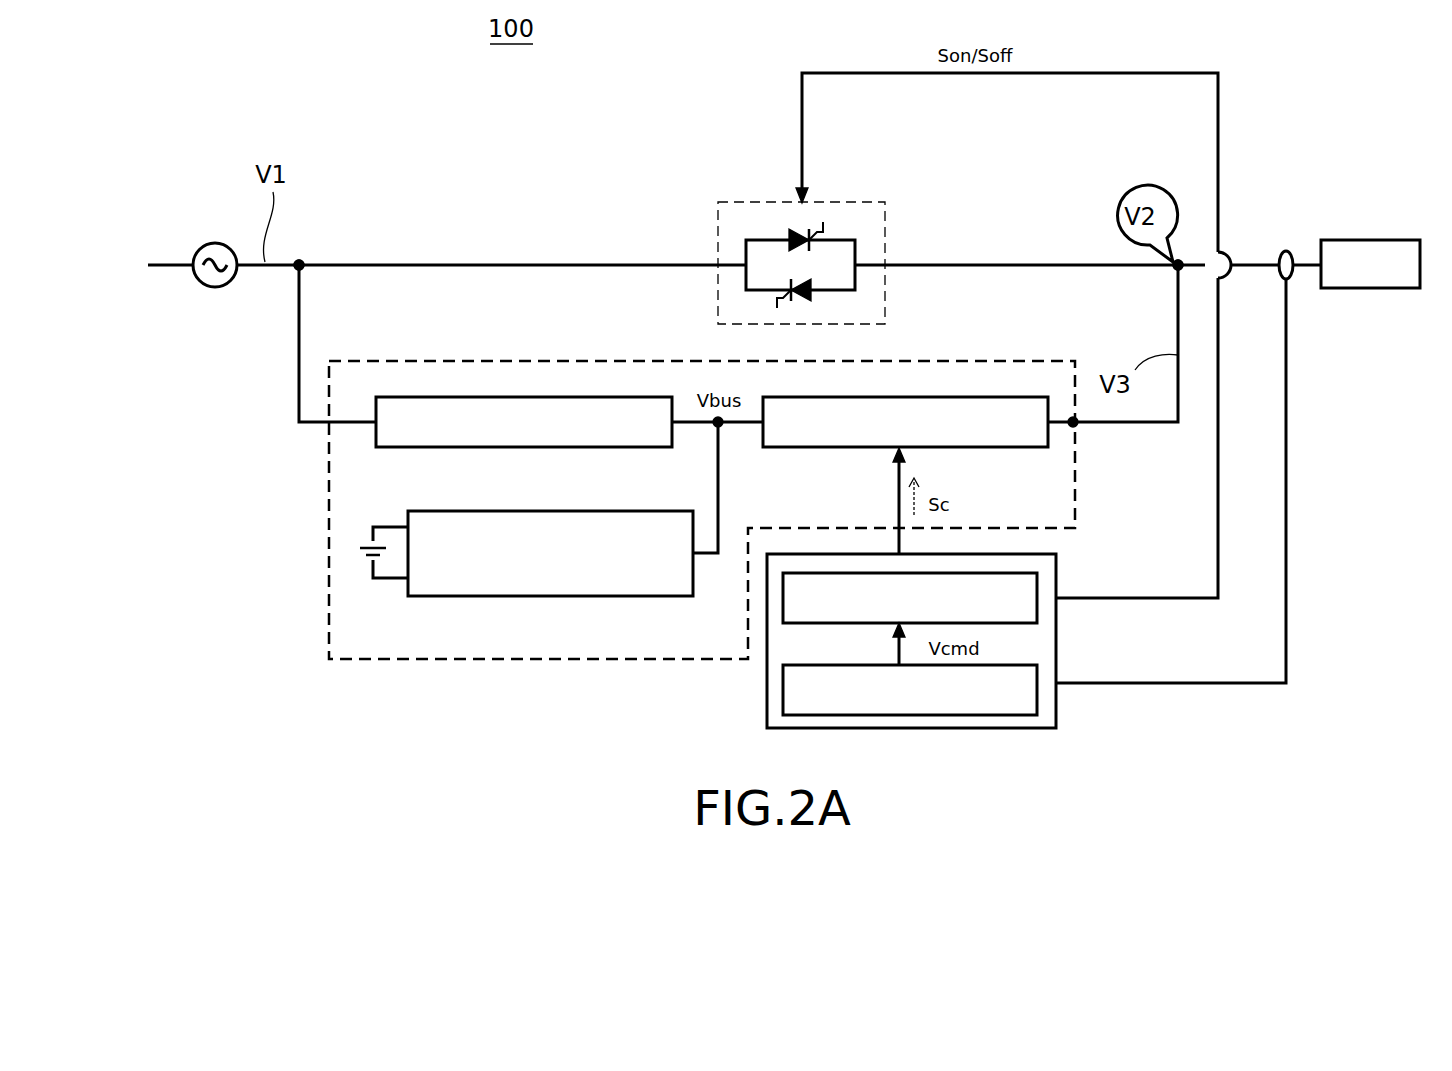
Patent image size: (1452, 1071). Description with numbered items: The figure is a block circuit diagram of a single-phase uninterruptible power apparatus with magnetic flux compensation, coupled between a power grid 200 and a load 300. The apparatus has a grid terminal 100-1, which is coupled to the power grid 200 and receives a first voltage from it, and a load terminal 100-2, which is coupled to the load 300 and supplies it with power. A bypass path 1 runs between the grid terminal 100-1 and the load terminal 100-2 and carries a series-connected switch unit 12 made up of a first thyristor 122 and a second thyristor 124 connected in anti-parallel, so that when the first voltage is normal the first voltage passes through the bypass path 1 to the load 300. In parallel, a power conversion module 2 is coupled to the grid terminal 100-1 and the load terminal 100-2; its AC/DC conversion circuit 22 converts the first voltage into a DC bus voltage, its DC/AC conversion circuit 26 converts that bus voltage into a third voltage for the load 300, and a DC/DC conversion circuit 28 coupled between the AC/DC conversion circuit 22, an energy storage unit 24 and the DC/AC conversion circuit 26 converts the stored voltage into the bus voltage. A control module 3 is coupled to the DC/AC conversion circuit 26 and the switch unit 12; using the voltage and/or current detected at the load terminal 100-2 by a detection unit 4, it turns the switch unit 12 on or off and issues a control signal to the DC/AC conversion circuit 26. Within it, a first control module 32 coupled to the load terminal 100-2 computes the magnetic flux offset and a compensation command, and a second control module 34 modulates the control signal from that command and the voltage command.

The bypass path 1 is at (694, 186).
The power conversion module 2 is at (373, 640).
The control module 3 is at (944, 645).
The detection unit 4 is at (1286, 250).
The switch unit 12 is at (753, 226).
The first thyristor 122 is at (785, 235).
The second thyristor 124 is at (770, 293).
The AC/DC conversion circuit 22 is at (558, 440).
The energy storage unit 24 is at (355, 562).
The DC/AC conversion circuit 26 is at (824, 438).
The DC/DC conversion circuit 28 is at (520, 585).
The first control module 32 is at (1028, 700).
The second control module 34 is at (1030, 589).
The grid terminal 100-1 is at (302, 257).
The load terminal 100-2 is at (1172, 272).
The power grid 200 is at (215, 243).
The load 300 is at (1378, 240).